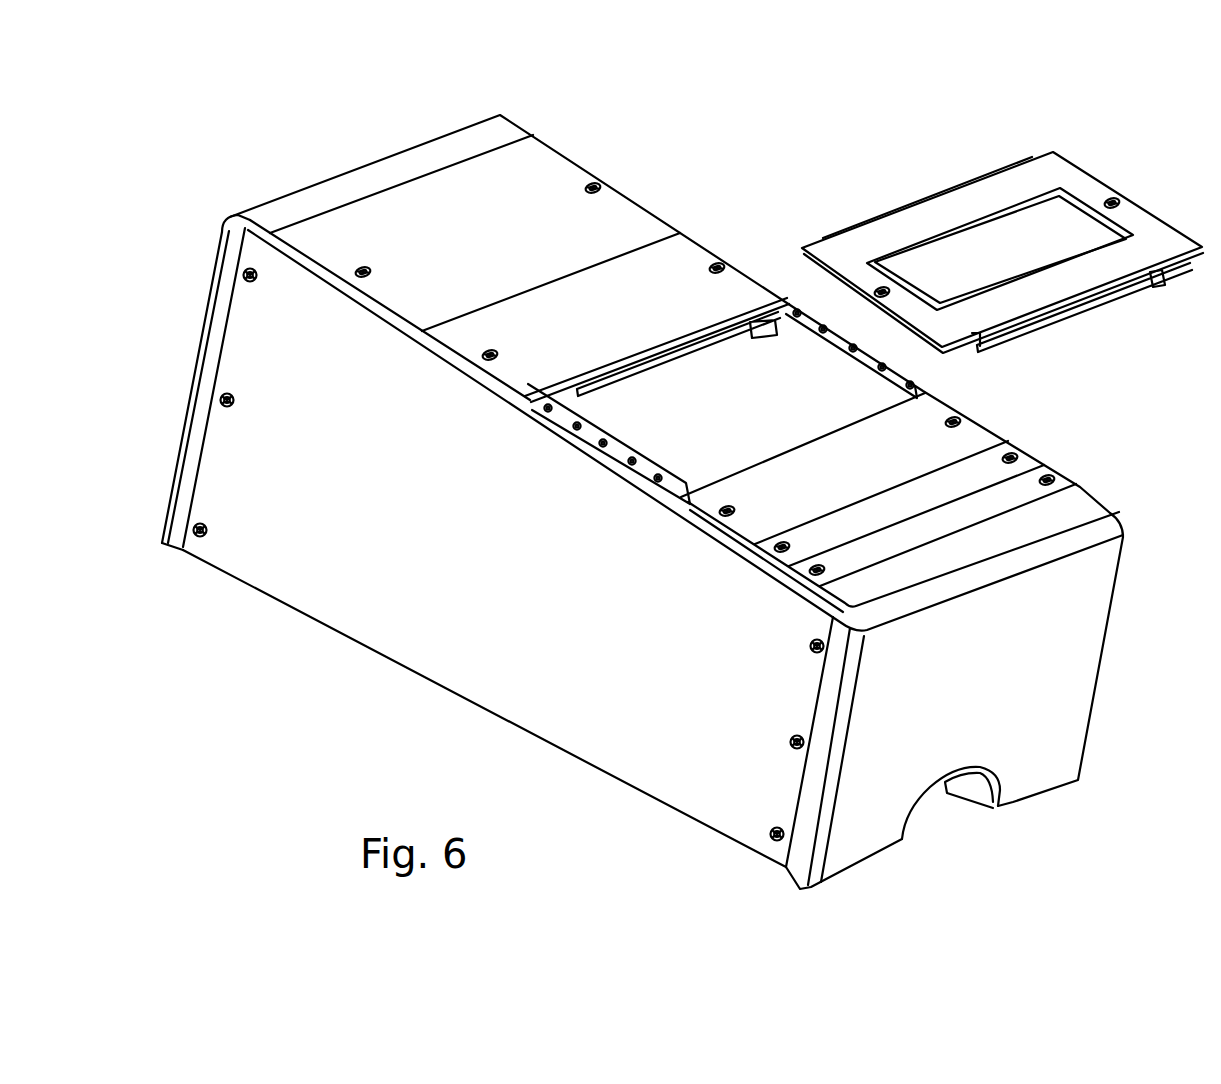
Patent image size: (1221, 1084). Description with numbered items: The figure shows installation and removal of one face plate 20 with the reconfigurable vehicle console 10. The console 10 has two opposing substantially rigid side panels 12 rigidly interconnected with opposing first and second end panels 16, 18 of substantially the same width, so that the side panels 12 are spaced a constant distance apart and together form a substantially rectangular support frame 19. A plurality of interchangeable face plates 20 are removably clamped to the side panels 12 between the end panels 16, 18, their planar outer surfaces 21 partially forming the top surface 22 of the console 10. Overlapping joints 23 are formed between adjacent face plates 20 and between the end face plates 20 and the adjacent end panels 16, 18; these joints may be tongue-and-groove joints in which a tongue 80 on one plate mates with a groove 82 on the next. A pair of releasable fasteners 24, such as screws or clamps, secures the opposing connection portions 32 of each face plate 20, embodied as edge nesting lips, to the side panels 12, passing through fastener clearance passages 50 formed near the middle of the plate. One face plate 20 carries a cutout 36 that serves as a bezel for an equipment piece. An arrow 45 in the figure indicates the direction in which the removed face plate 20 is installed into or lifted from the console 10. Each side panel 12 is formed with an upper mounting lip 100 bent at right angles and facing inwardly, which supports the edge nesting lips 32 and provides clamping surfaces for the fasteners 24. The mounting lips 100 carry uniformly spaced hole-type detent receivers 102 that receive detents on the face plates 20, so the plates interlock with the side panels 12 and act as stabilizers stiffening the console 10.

The reconfigurable vehicle console 10 is at (370, 123).
The side panel 12 is at (757, 432).
The first end panel 16 is at (1016, 796).
The second end panel 18 is at (280, 207).
The rectangular support frame 19 is at (343, 175).
The face plate 20 is at (555, 147).
The outer surface 21 is at (498, 255).
The top surface 22 is at (537, 173).
The overlapping joint 23 is at (383, 192).
The releasable fastener 24 is at (372, 271).
The connection portion 32 is at (367, 308).
The cutout 36 is at (997, 220).
The installation direction 45 is at (705, 410).
The fastener clearance passage 50 is at (870, 297).
The tongue 80 is at (833, 232).
The groove 82 is at (640, 363).
The upper mounting lip 100 is at (562, 418).
The detent receiver 102 is at (545, 416).